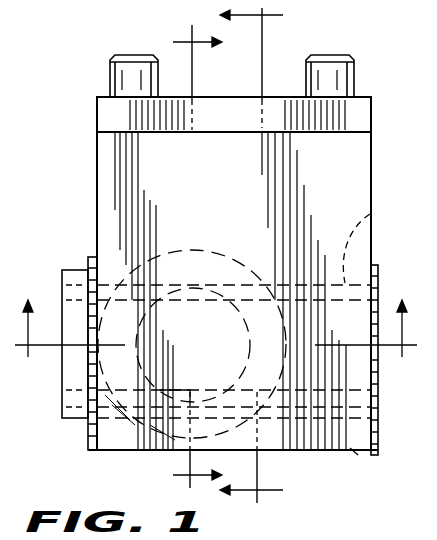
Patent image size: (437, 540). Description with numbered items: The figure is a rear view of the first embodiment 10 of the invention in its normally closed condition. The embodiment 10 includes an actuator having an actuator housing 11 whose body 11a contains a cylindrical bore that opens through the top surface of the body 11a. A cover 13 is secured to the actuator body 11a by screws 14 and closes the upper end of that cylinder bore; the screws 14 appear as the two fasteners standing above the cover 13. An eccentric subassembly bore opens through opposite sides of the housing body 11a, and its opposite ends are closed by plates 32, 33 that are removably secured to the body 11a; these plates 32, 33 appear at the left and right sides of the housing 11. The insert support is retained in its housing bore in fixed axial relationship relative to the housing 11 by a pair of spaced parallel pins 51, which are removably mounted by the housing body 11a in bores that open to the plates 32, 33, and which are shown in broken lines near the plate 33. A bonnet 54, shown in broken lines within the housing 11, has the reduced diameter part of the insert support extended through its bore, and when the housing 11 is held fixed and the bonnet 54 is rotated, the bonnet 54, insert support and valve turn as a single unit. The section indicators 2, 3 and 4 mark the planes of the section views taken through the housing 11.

The first embodiment 10 is at (372, 192).
The actuator housing 11 is at (97, 200).
The body 11a is at (97, 145).
The cover 13 is at (355, 118).
The screws 14 is at (352, 80).
The plate 32 is at (88, 262).
The plate 33 is at (378, 423).
The pins 51 is at (371, 222).
The bonnet 54 is at (180, 266).
The section line 2- 2 is at (182, 256).
The section line 3- 3 is at (264, 255).
The section line 4- 4 is at (216, 351).